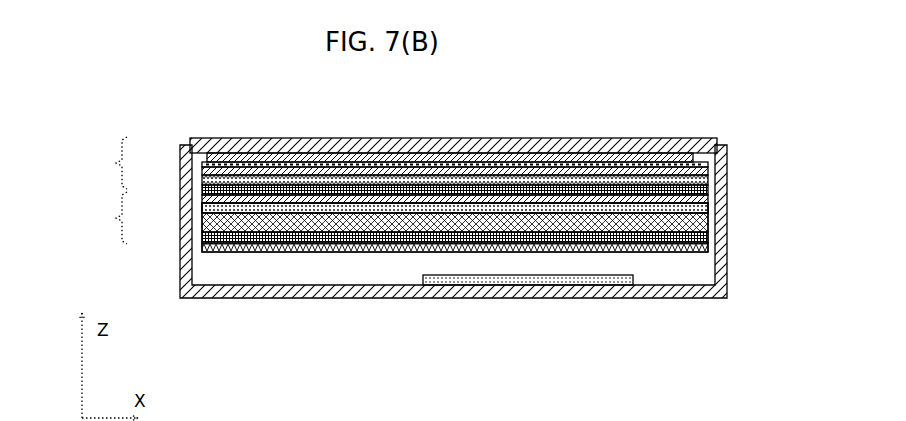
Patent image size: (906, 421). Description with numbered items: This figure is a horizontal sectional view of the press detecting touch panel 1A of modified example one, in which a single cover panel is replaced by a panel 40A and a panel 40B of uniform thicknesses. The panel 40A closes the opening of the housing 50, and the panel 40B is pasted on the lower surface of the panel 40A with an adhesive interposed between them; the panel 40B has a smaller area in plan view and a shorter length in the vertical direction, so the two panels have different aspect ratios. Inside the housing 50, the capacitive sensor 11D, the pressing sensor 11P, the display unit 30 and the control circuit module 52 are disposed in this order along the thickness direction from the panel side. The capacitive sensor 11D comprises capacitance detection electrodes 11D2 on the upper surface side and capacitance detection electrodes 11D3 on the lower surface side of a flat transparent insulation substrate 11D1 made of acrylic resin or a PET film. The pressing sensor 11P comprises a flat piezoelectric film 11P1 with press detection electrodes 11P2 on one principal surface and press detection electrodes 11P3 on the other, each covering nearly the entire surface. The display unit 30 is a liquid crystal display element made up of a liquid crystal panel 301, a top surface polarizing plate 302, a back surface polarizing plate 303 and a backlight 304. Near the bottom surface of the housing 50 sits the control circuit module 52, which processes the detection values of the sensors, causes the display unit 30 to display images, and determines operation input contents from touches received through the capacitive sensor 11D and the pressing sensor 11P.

The press detecting touch panel 1A is at (653, 87).
The capacitive sensor 11D is at (102, 163).
The insulation substrate 11D1 is at (203, 171).
The capacitance detection electrodes 11D2 is at (203, 164).
The capacitance detection electrodes 11D3 is at (203, 180).
The pressing sensor 11P is at (102, 218).
The piezoelectric film 11P1 is at (203, 199).
The press detection electrodes 11P2 is at (203, 190).
The press detection electrodes 11P3 is at (203, 208).
The display unit 30 is at (766, 200).
The liquid crystal panel 301 is at (483, 224).
The top surface polarizing plate 302 is at (483, 204).
The back surface polarizing plate 303 is at (483, 245).
The backlight 304 is at (483, 260).
The panel 40A is at (231, 137).
The panel 40B is at (284, 136).
The housing 50 is at (703, 298).
The control circuit module 52 is at (592, 298).